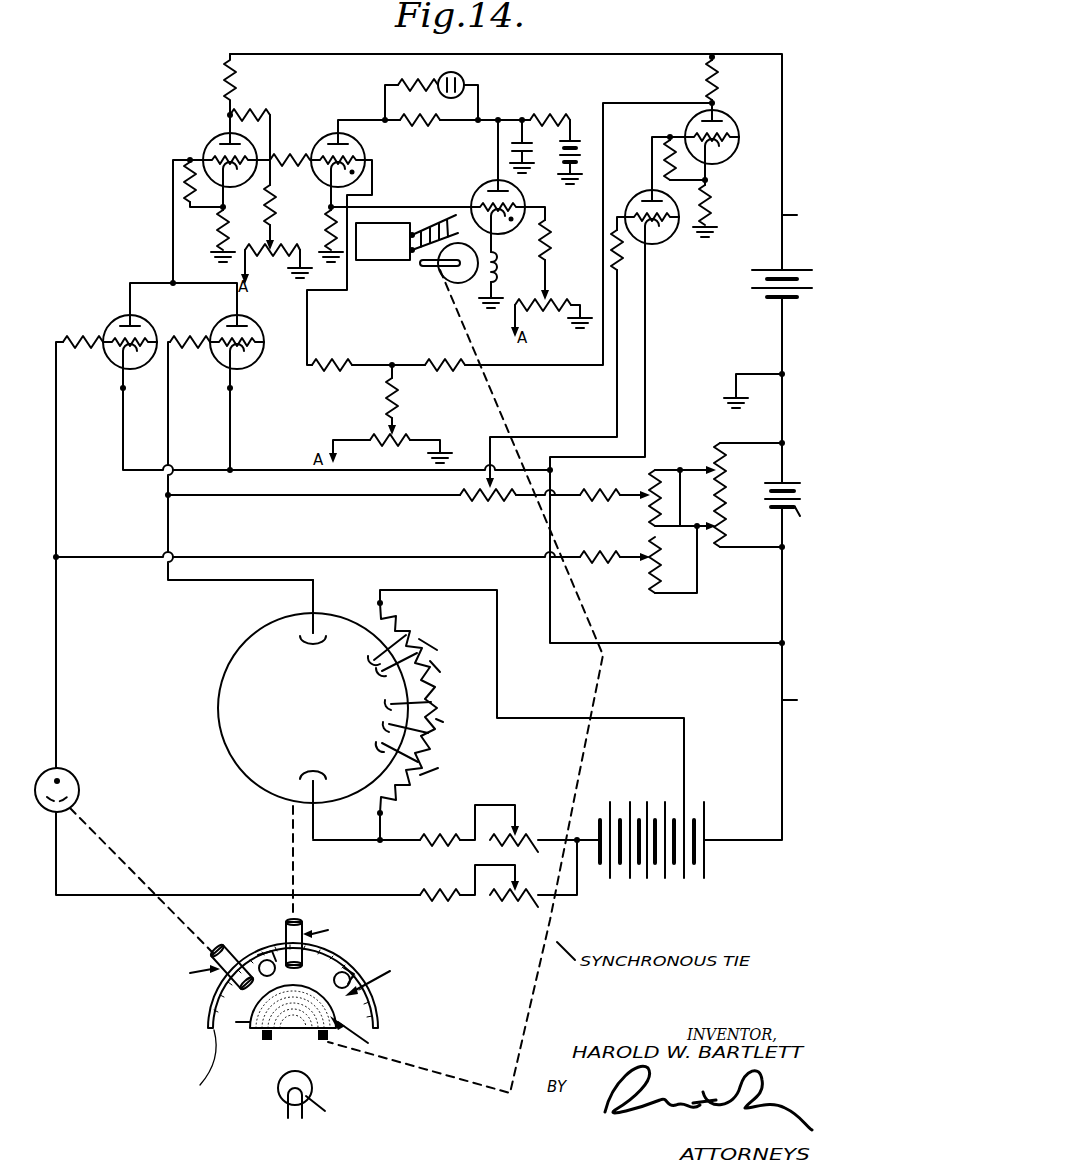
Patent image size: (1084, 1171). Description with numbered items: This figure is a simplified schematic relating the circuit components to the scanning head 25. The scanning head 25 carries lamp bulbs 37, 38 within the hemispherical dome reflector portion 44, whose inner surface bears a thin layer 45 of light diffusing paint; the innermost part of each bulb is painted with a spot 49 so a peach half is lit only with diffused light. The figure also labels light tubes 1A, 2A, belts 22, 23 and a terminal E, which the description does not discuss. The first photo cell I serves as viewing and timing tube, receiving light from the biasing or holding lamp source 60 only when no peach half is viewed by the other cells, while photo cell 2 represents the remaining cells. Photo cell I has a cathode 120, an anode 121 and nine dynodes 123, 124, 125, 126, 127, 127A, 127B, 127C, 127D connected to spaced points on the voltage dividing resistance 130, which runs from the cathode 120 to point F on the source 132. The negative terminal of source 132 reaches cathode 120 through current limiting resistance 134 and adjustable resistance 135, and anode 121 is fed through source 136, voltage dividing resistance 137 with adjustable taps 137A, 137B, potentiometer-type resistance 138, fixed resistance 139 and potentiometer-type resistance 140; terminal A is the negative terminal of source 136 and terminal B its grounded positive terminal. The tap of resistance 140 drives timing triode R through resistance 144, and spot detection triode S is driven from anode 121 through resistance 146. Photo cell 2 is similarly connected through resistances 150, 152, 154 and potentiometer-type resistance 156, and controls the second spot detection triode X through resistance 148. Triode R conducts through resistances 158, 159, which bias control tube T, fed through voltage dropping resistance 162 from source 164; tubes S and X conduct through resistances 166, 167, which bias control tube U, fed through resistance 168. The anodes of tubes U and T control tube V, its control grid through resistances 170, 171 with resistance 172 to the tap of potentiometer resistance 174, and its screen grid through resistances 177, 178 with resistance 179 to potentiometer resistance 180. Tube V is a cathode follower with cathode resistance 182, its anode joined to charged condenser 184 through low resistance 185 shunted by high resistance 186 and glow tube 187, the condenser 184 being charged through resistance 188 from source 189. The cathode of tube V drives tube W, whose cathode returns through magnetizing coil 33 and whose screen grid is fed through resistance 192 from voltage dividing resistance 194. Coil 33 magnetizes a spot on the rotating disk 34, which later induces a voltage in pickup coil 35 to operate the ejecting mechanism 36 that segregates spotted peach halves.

The voltage dropping resistance 168 is at (222, 78).
The resistance 171 is at (262, 112).
The resistance 170 is at (291, 155).
The resistance 166 is at (184, 183).
The resistance 167 is at (217, 228).
The resistance 172 is at (276, 193).
The potentiometer resistance 174 is at (272, 266).
The resistance 182 is at (325, 226).
The relatively high resistance 186 is at (411, 80).
The glow tube 187 is at (466, 80).
The relatively low resistance 185 is at (421, 136).
The charged condenser 184 is at (512, 150).
The charging resistance 188 is at (548, 117).
The source 189 is at (576, 146).
The voltage dropping resistance 162 is at (719, 84).
The resistance 158 is at (664, 156).
The resistance 159 is at (711, 205).
The source 164 is at (767, 270).
The resistance 144 is at (611, 251).
The resistance 192 is at (551, 236).
The voltage dividing resistance 194 is at (562, 302).
The pickup coil 35 is at (462, 224).
The magnetizing coil 33 is at (498, 271).
The ejecting mechanism 36 is at (385, 260).
The magnetizable disk 34 is at (454, 284).
The resistance 148 is at (88, 338).
The resistance 146 is at (192, 350).
The resistance 177 is at (338, 360).
The resistance 178 is at (453, 373).
The resistance 179 is at (386, 405).
The potentiometer resistance 180 is at (403, 434).
The potentiometer-type resistance 140 is at (494, 501).
The fixed resistance 139 is at (596, 490).
The resistance 154 is at (608, 565).
The potentiometer-type resistance 138 is at (649, 488).
The potentiometer-type resistance 156 is at (652, 585).
The voltage dividing resistance 137 is at (712, 484).
The adjustable tap 137A is at (713, 466).
The adjustable tap 137B is at (718, 546).
The source 136 is at (797, 481).
The anode 121 is at (305, 632).
The cathode 120 is at (306, 780).
The voltage dividing resistance 130 is at (400, 614).
The dynode 127D is at (368, 657).
The dynode 127C is at (376, 672).
The dynode 127B is at (448, 650).
The dynode 127A is at (456, 671).
The dynode 127 is at (385, 704).
The dynode 126 is at (455, 722).
The dynode 125 is at (383, 726).
The dynode 124 is at (444, 765).
The dynode 123 is at (376, 745).
The current limiting resistance 134 is at (446, 834).
The adjustable resistance 135 is at (530, 836).
The current limiting resistance 150 is at (447, 890).
The current adjusting resistance 152 is at (530, 891).
The voltage source 132 is at (649, 880).
The photo cell 2 is at (79, 786).
The light tube 1A is at (286, 929).
The light tube 2A is at (246, 953).
The lamp bulb 37 is at (276, 971).
The lamp bulb 38 is at (336, 973).
The dome reflector portion 44 is at (336, 960).
The spot 49 is at (364, 1006).
The scanning head 25 is at (205, 1010).
The belt 22 is at (262, 1036).
The belt 23 is at (324, 1043).
The biasing or holding lamp source 60 is at (282, 1096).
The thin layer of light diffusing paint 45 is at (139, 1085).
The control tube U is at (208, 137).
The control tube V is at (365, 145).
The tube W is at (523, 194).
The control tube T is at (740, 154).
The timing triode R is at (668, 246).
The second spot detection triode X is at (133, 370).
The spot detection triode S is at (243, 369).
The photo cell I is at (219, 693).
The terminal E is at (806, 217).
The terminal B is at (810, 377).
The terminal A is at (808, 702).
The point F is at (684, 802).